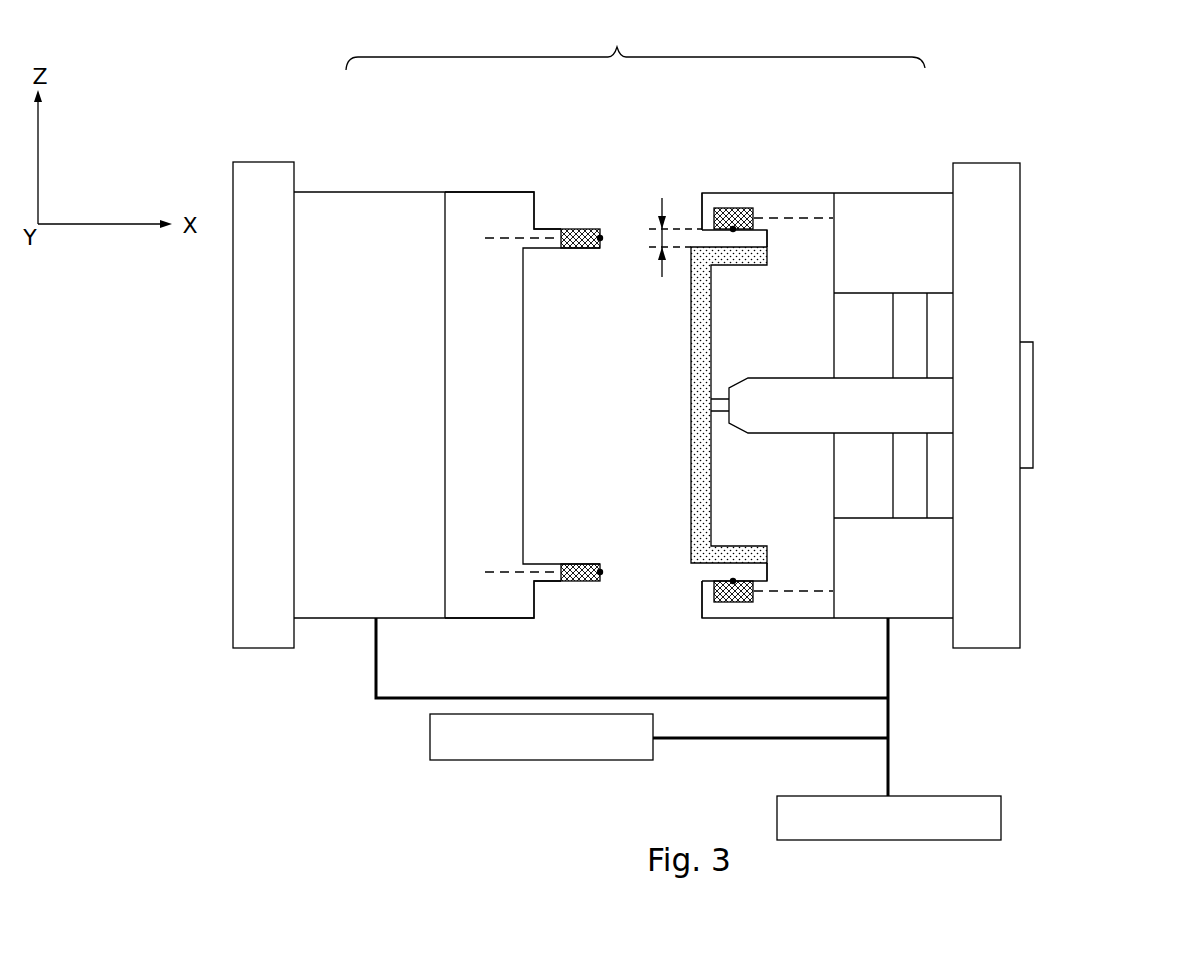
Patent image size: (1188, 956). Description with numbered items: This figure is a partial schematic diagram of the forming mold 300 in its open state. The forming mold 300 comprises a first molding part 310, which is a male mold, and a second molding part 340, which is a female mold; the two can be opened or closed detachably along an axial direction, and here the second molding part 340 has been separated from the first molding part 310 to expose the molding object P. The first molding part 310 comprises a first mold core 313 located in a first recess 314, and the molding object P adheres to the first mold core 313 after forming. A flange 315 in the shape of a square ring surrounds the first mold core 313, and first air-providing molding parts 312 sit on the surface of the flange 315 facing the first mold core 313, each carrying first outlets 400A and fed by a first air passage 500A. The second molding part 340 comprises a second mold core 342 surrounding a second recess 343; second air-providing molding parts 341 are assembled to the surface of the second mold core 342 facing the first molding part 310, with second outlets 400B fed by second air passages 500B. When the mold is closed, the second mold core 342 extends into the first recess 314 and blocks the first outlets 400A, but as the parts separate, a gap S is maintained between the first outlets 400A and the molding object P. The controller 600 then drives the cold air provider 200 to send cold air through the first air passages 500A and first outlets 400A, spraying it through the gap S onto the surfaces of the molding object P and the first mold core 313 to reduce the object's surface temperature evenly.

The forming mold 300 is at (635, 44).
The second molding part 340 is at (357, 200).
The second mold core 342 is at (548, 229).
The second air-providing molding part 341 is at (583, 229).
The second recess 343 is at (505, 281).
The second outlet 400B is at (602, 238).
The second air passage 500B is at (502, 236).
The first molding part 310 is at (889, 215).
The first air-providing molding part 312 is at (732, 207).
The flange 315 is at (700, 199).
The first recess 314 is at (771, 214).
The first mold core 313 is at (730, 482).
The molding object P is at (700, 356).
The first outlet 400A is at (733, 231).
The first air passage 500A is at (815, 216).
The gap S is at (665, 237).
The cold air provider 200 is at (541, 760).
The controller 600 is at (1001, 815).